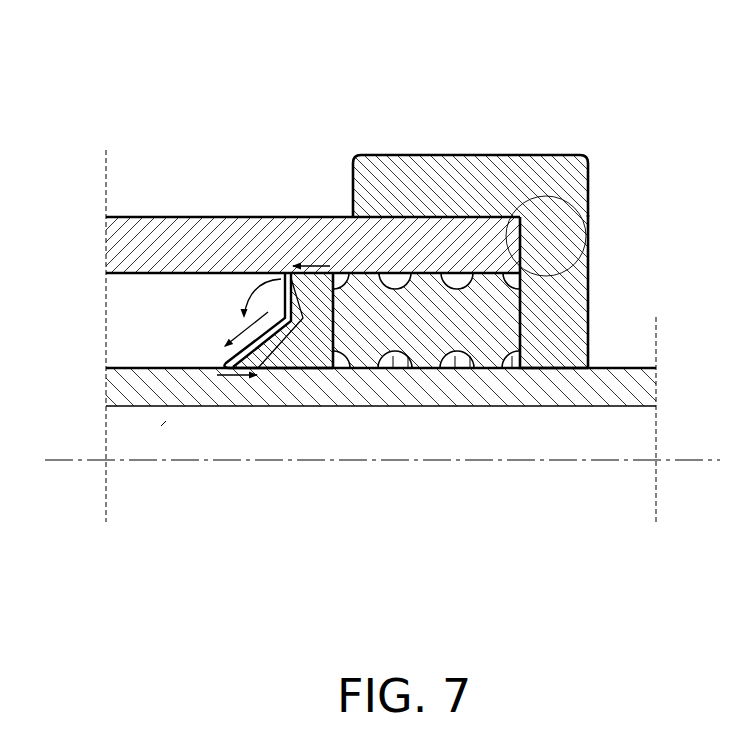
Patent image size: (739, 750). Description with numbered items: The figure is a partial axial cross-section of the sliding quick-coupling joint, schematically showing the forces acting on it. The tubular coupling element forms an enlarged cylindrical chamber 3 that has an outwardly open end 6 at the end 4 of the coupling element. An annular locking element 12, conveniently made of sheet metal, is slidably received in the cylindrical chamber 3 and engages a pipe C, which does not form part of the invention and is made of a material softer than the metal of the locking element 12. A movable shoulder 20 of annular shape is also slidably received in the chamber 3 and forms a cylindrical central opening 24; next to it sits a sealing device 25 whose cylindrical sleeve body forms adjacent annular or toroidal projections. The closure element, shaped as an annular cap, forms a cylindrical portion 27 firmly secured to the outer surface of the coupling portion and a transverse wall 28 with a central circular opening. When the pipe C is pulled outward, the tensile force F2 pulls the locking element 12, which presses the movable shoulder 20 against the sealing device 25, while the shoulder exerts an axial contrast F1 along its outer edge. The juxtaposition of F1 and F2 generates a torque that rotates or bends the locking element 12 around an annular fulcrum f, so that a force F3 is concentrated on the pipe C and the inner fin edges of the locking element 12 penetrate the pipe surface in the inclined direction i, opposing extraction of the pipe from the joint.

The cylindrical chamber 3 is at (133, 340).
The end 4 is at (498, 199).
The outwardly open end 6 is at (590, 213).
The annular locking element 12 is at (285, 273).
The movable shoulder 20 is at (278, 340).
The cylindrical central opening 24 is at (443, 400).
The sealing device 25 is at (430, 352).
The cylindrical portion 27 is at (457, 207).
The transverse wall 28 is at (490, 367).
The pipe C is at (393, 391).
The inclined direction of incision i is at (205, 383).
The annular fulcrum f is at (257, 283).
The axial contrast force F1 is at (312, 263).
The tensile force F2 is at (235, 375).
The reaction force F3 is at (233, 340).